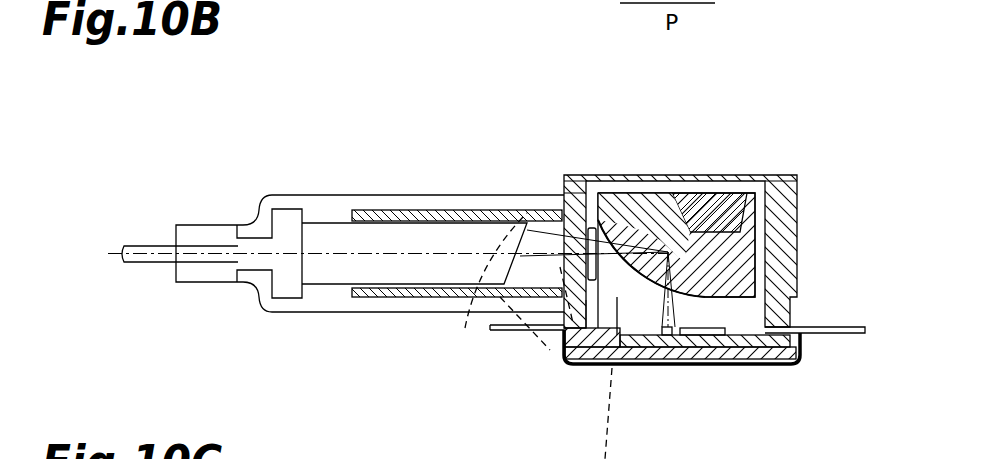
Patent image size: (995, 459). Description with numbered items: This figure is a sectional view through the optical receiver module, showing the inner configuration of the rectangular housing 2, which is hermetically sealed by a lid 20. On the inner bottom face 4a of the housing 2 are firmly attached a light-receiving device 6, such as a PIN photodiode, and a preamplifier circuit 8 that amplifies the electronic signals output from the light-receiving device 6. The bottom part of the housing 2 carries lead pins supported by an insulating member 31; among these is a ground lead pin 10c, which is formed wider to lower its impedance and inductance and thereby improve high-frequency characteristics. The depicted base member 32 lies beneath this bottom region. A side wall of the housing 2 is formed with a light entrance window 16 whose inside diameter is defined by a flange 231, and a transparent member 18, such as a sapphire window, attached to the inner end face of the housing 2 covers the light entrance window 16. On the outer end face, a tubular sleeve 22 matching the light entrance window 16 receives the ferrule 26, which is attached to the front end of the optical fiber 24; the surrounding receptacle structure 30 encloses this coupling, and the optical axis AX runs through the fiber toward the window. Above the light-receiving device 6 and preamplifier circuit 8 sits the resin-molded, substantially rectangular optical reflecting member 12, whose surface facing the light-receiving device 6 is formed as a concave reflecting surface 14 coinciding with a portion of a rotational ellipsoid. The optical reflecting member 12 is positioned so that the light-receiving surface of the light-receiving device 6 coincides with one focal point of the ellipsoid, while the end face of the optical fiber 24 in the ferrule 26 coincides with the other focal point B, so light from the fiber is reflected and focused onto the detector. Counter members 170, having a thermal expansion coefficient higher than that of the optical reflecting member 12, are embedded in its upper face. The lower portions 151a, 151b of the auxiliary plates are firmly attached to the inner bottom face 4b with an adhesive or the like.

The housing 2 is at (699, 226).
The lid 20 is at (780, 176).
The counter member 170 is at (718, 195).
The flange 231 is at (558, 212).
The optical reflecting member 12 is at (745, 257).
The reflecting surface 14 is at (668, 252).
The transparent member 18 is at (595, 228).
The light entrance window 16 is at (543, 332).
The sleeve 22 is at (421, 210).
The optical fiber 24 is at (150, 245).
The ferrule 26 is at (331, 232).
The receptacle housing 30 is at (287, 194).
The optical axis AX is at (363, 254).
The focal point B is at (527, 214).
The inner bottom face 4a is at (642, 350).
The inner bottom face 4b is at (592, 360).
The light-receiving device 6 is at (670, 338).
The preamplifier circuit 8 is at (703, 340).
The insulating member 31 is at (780, 366).
The base 32 is at (745, 365).
The lower portion of auxiliary plate 151a is at (560, 357).
The lower portion of auxiliary plate 151b is at (790, 312).
The ground lead pin 10c is at (500, 328).